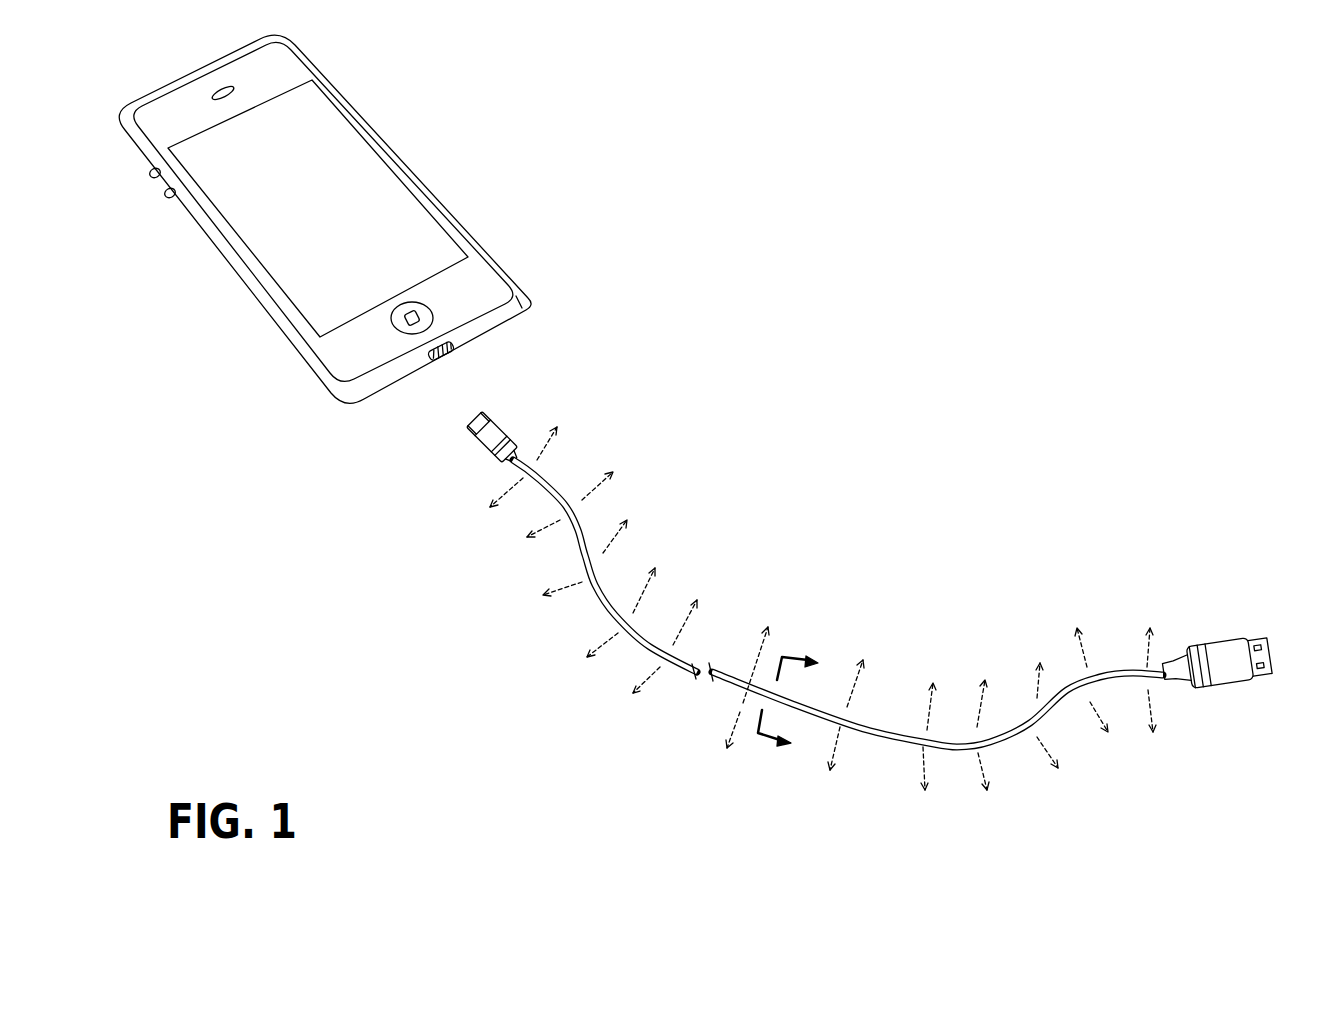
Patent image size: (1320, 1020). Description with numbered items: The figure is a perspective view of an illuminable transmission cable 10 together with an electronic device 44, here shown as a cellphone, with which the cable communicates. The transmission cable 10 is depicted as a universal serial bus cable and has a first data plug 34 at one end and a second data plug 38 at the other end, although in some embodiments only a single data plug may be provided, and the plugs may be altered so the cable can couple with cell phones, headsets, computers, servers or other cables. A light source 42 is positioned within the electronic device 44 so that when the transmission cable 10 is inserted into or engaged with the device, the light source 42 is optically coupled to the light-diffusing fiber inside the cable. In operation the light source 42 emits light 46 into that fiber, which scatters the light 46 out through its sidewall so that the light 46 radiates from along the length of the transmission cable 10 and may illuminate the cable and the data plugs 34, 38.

The transmission cable 10 is at (846, 621).
The first data plug 34 is at (488, 445).
The second data plug 38 is at (1217, 659).
The light source 42 is at (454, 343).
The electronic device 44 is at (467, 283).
The light 46 is at (612, 535).